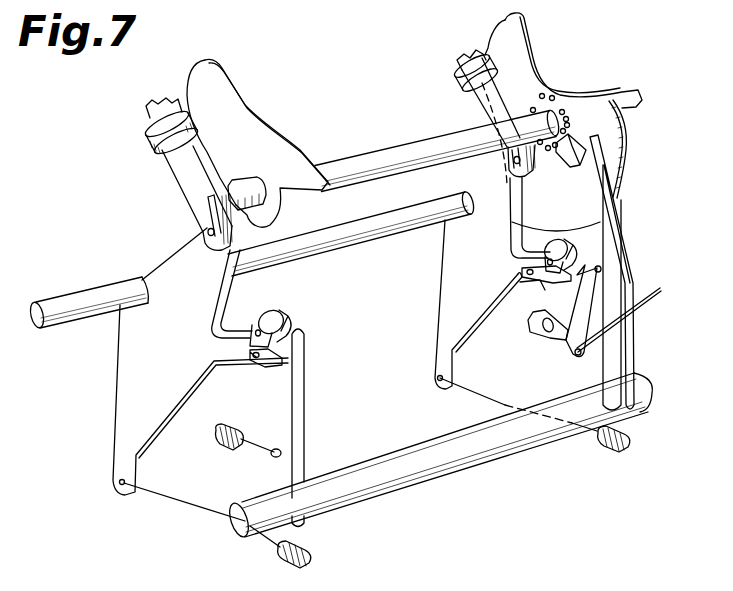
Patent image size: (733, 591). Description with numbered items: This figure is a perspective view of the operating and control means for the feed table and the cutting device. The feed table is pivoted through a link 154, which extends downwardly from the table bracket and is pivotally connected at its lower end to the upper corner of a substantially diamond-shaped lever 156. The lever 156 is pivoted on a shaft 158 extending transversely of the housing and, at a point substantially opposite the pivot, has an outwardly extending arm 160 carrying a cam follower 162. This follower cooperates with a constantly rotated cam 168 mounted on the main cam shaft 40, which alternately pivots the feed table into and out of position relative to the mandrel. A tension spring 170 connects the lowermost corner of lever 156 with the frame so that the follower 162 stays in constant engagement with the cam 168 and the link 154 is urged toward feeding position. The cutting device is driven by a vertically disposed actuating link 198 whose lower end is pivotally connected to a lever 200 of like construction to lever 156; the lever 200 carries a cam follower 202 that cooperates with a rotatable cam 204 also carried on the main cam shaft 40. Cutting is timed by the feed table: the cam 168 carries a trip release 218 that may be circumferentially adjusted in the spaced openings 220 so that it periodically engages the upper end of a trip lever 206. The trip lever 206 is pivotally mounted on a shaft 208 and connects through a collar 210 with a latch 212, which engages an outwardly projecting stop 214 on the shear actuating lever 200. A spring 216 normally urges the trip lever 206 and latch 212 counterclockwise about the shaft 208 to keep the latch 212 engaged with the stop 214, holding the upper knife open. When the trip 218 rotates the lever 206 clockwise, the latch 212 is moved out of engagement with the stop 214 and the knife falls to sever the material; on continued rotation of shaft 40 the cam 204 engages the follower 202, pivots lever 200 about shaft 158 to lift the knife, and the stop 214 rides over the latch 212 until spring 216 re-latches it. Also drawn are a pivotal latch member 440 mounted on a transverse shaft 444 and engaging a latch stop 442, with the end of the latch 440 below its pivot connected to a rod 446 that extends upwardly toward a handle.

The main cam shaft 40 is at (398, 145).
The link 154 is at (462, 62).
The lever 156 is at (445, 272).
The shaft 158 is at (88, 295).
The arm 160 is at (527, 286).
The cam follower 162 is at (560, 245).
The cam 168 is at (612, 136).
The tension spring 170 is at (608, 448).
The actuating link 198 is at (150, 108).
The lever 200 is at (132, 370).
The cam follower 202 is at (290, 304).
The cam 204 is at (293, 145).
The trip lever 206 is at (618, 246).
The shaft 208 is at (652, 394).
The collar 210 is at (463, 464).
The latch 212 is at (304, 414).
The stop 214 is at (263, 368).
The spring 216 is at (250, 424).
The trip release 218 is at (571, 141).
The spaced openings 220 is at (568, 110).
The latch member 440 is at (600, 276).
The latch stop 442 is at (524, 273).
The shaft 444 is at (545, 332).
The rod 446 is at (657, 297).